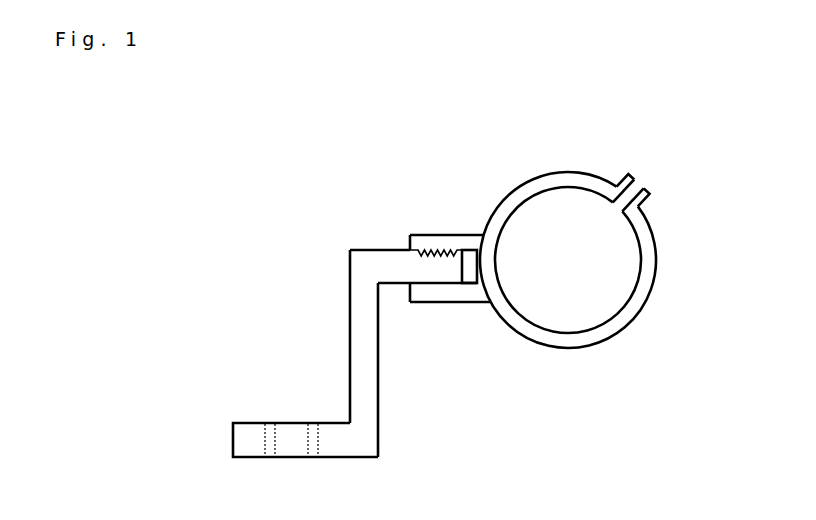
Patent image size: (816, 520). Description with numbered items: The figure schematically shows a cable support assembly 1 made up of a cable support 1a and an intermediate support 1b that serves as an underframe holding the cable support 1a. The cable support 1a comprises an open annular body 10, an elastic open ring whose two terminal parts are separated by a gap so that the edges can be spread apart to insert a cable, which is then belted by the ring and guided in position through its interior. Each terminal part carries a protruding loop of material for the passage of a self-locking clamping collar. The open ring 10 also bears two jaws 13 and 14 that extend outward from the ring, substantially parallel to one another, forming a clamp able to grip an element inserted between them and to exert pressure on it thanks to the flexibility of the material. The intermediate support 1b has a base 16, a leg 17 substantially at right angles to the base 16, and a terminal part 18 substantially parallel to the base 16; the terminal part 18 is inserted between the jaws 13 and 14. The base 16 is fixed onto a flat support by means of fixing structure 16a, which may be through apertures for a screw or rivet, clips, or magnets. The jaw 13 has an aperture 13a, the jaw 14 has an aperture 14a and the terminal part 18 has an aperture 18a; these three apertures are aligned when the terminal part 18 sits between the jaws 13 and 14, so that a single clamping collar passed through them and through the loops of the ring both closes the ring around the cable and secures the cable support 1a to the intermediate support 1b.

The cable support assembly 1 is at (276, 170).
The cable support 1a is at (515, 153).
The intermediate support 1b is at (215, 293).
The open annular body 10 is at (555, 348).
The jaw 13 is at (470, 235).
The aperture 13a is at (436, 235).
The jaw 14 is at (480, 292).
The aperture 14a is at (438, 303).
The base 16 is at (243, 422).
The fixing structure 16a is at (314, 422).
The leg 17 is at (360, 348).
The terminal part 18 is at (373, 258).
The aperture 18a is at (444, 304).